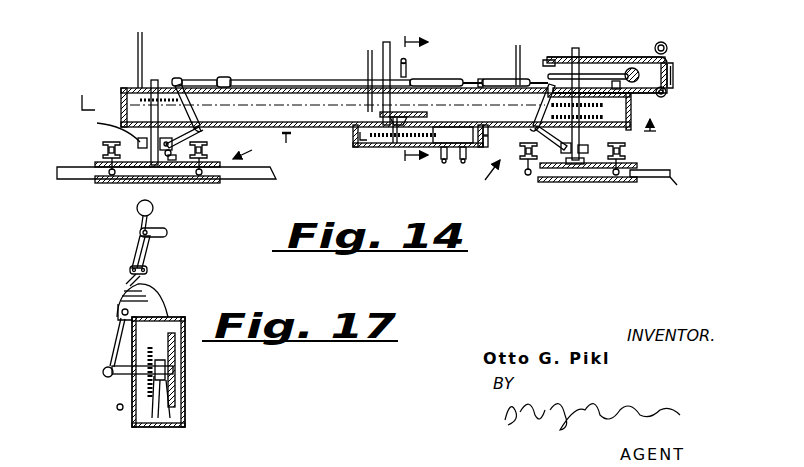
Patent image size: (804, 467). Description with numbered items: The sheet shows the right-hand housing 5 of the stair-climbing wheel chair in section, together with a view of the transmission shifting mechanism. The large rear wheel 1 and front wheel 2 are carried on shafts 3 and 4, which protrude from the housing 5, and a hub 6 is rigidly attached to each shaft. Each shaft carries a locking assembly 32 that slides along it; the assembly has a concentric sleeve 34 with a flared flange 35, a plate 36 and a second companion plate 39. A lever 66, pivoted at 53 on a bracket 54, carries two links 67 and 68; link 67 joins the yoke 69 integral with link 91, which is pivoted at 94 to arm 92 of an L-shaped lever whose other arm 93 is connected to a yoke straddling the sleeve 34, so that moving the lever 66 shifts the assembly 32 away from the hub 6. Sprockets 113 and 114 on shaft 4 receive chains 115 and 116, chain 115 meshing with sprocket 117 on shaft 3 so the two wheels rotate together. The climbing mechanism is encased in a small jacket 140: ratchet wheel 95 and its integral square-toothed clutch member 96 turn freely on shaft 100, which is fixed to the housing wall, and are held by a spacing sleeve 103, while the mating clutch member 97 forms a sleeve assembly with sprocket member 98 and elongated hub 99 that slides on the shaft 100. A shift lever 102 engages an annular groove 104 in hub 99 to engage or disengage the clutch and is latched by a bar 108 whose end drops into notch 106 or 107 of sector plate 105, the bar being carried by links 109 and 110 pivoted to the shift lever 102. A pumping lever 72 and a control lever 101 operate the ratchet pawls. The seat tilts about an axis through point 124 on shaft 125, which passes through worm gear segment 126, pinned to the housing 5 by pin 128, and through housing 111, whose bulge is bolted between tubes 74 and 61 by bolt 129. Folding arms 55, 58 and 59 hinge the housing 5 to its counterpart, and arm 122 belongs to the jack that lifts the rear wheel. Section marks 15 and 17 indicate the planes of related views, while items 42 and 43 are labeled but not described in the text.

In FIG. 14, the large wheel 1 is at (275, 178).
In FIG. 14, the large wheel 2 is at (676, 182).
In FIG. 14, the shaft 3 is at (155, 80).
In FIG. 14, the shaft 4 is at (575, 165).
In FIG. 14, the housing 5 is at (272, 80).
In FIG. 17, the housing 5 is at (188, 422).
In FIG. 14, the hub 6 is at (140, 183).
In FIG. 14, the section line 15- 15 is at (365, 114).
In FIG. 14, the section line 17- 17 is at (420, 102).
In FIG. 14, the locking assembly 32 is at (366, 169).
In FIG. 14, the concentric sleeve 34 is at (170, 156).
In FIG. 14, the flange 35 is at (105, 130).
In FIG. 14, the plate 36 is at (107, 152).
In FIG. 14, the second plate 39 is at (122, 160).
In FIG. 14, the carriage plate 42 is at (587, 153).
In FIG. 14, the bracket 43 is at (590, 144).
In FIG. 14, the pivot point 53 is at (430, 78).
In FIG. 14, the bracket 54 is at (465, 78).
In FIG. 14, the arm 55 is at (143, 42).
In FIG. 14, the arm 58 is at (522, 47).
In FIG. 14, the arm 59 is at (366, 52).
In FIG. 14, the tube 61 is at (668, 48).
In FIG. 14, the lever 66 is at (482, 78).
In FIG. 14, the link 67 is at (300, 87).
In FIG. 14, the link 68 is at (548, 60).
In FIG. 17, the link 68 is at (117, 409).
In FIG. 14, the yoke 69 is at (227, 78).
In FIG. 14, the lever 72 is at (446, 164).
In FIG. 14, the tube 74 is at (667, 93).
In FIG. 14, the link 91 is at (204, 80).
In FIG. 14, the arm 92 is at (202, 112).
In FIG. 14, the arm 93 is at (173, 143).
In FIG. 14, the pivot 94 is at (177, 78).
In FIG. 14, the ratchet wheel 95 is at (378, 138).
In FIG. 17, the ratchet wheel 95 is at (172, 420).
In FIG. 14, the square-toothed clutch member 96 is at (358, 133).
In FIG. 17, the square-toothed clutch member 96 is at (158, 420).
In FIG. 17, the square-toothed clutch member 97 is at (152, 418).
In FIG. 14, the sprocket member 98 is at (388, 77).
In FIG. 17, the sprocket member 98 is at (146, 392).
In FIG. 17, the elongated hub 99 is at (112, 360).
In FIG. 14, the shaft 100 is at (427, 112).
In FIG. 17, the shaft 100 is at (175, 368).
In FIG. 14, the control lever 101 is at (465, 165).
In FIG. 14, the shift lever 102 is at (405, 61).
In FIG. 17, the shift lever 102 is at (136, 252).
In FIG. 14, the spacing sleeve 103 is at (396, 146).
In FIG. 17, the spacing sleeve 103 is at (178, 390).
In FIG. 17, the annular groove 104 is at (103, 373).
In FIG. 17, the sector plate 105 is at (121, 308).
In FIG. 17, the notch 106 is at (128, 286).
In FIG. 17, the notch 107 is at (150, 286).
In FIG. 17, the bar 108 is at (150, 252).
In FIG. 17, the handle link 109 is at (167, 233).
In FIG. 17, the link 110 is at (130, 270).
In FIG. 14, the housing 111 is at (652, 57).
In FIG. 14, the sprocket 113 is at (628, 106).
In FIG. 14, the sprocket 114 is at (628, 118).
In FIG. 14, the chain 115 is at (501, 135).
In FIG. 14, the chain belt 116 is at (485, 147).
In FIG. 14, the sprocket 117 is at (128, 95).
In FIG. 14, the arm 122 is at (288, 144).
In FIG. 14, the point 124 is at (580, 50).
In FIG. 14, the shaft 125 is at (585, 73).
In FIG. 14, the worm gear segment 126 is at (633, 68).
In FIG. 14, the pin 128 is at (612, 86).
In FIG. 14, the bolt 129 is at (674, 70).
In FIG. 14, the small jacket 140 is at (418, 136).